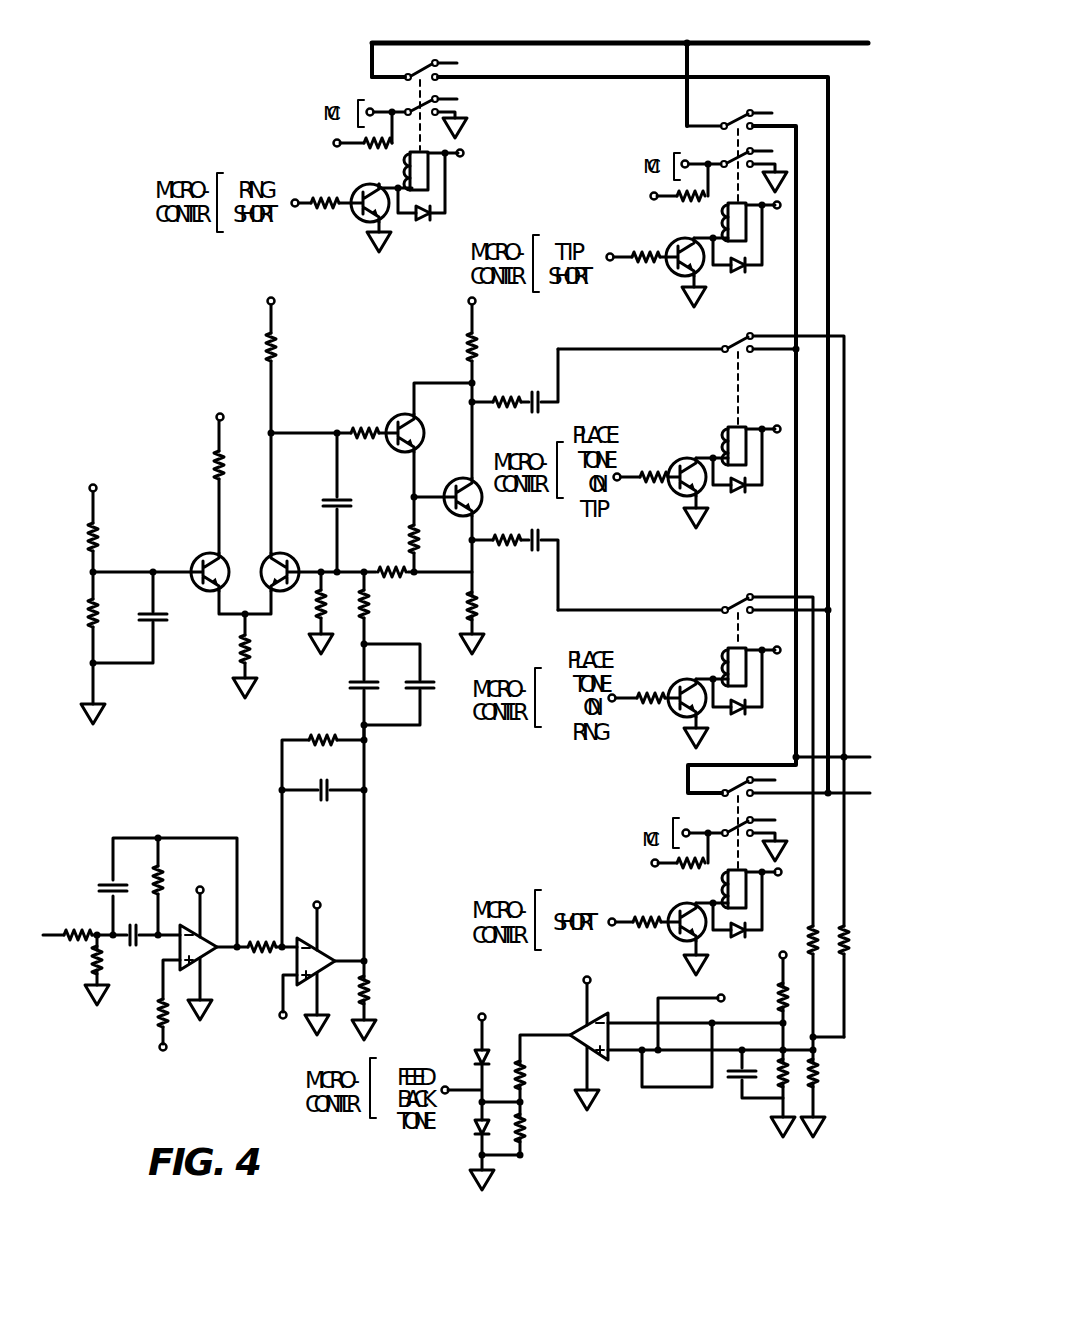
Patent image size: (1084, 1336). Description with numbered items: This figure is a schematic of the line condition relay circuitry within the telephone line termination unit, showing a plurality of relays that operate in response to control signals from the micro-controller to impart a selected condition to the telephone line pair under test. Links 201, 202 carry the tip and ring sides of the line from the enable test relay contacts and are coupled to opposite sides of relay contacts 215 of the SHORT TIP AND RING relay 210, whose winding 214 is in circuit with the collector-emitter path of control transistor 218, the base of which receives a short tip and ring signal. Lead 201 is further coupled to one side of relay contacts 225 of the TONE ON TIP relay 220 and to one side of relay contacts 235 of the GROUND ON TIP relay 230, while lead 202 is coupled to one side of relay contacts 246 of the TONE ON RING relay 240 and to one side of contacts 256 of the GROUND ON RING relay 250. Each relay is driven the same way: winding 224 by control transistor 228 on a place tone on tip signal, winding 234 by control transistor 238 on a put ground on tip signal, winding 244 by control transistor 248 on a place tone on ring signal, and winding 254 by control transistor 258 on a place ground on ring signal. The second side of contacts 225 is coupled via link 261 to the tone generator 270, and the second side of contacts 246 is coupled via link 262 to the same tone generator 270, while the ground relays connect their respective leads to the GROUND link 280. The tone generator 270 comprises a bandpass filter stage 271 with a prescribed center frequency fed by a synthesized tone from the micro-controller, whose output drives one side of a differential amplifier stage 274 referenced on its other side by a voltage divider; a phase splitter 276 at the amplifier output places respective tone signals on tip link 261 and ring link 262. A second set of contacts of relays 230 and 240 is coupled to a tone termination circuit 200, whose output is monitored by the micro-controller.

The tone termination circuit 200 is at (685, 1135).
The link 201 is at (789, 123).
The link 202 is at (551, 79).
The SHORT TIP AND RING relay 210 is at (713, 899).
The winding 214 is at (748, 888).
The relay contacts 215 is at (748, 781).
The control transistor 218 is at (670, 940).
The TONE ON TIP relay 220 is at (712, 451).
The winding 224 is at (727, 425).
The relay contacts 225 is at (736, 344).
The control transistor 228 is at (677, 496).
The GROUND ON TIP relay 230 is at (712, 231).
The winding 234 is at (748, 232).
The relay contacts 235 is at (736, 122).
The control transistor 238 is at (677, 275).
The TONE ON RING relay 240 is at (712, 676).
The winding 244 is at (727, 646).
The relay contacts 246 is at (728, 595).
The control transistor 248 is at (676, 718).
The GROUND ON RING relay 250 is at (395, 179).
The winding 254 is at (447, 180).
The relay contacts 256 is at (420, 42).
The control transistor 258 is at (368, 226).
The link 261 is at (580, 348).
The link 262 is at (560, 582).
The tone generator 270 is at (174, 405).
The bandpass filter stage 271 is at (277, 854).
The differential amplifier stage 274 is at (206, 686).
The phase splitter 276 is at (468, 301).
The GROUND link 280 is at (788, 42).